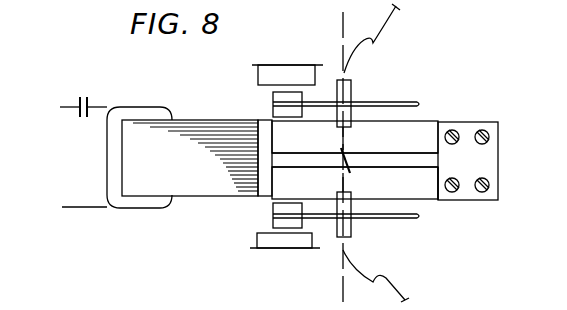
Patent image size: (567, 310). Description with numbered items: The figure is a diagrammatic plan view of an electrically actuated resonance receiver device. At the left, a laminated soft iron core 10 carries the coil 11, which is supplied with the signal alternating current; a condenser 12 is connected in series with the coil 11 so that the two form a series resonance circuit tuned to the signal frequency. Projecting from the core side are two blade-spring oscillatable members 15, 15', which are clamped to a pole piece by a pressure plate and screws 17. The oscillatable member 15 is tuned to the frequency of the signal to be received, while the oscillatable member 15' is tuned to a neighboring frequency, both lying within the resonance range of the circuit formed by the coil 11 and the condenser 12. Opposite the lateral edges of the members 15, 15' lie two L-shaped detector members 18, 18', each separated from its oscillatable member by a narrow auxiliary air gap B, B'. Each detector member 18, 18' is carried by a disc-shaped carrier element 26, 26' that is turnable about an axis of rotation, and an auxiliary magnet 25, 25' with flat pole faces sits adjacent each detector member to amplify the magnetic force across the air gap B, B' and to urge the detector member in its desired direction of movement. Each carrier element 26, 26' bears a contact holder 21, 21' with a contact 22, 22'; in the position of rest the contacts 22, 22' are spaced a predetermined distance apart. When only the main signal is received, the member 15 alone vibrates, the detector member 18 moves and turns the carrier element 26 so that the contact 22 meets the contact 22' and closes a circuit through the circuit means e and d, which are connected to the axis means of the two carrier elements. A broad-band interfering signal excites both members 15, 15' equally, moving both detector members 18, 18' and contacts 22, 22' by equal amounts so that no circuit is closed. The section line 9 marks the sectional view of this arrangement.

The soft iron core 10 is at (132, 158).
The coil 11 is at (101, 209).
The condenser 12 is at (90, 93).
The oscillatable member 15 is at (459, 146).
The oscillatable member 15' is at (442, 192).
The screws 17 is at (456, 130).
The detector member 18 is at (268, 103).
The detector member 18' is at (262, 220).
The contact holder 21 is at (368, 114).
The contact holder 21' is at (384, 206).
The contact 22 is at (362, 152).
The contact 22' is at (355, 171).
The auxiliary magnet 25 is at (287, 61).
The auxiliary magnet 25' is at (285, 252).
The carrier element 26 is at (352, 89).
The carrier element 26' is at (372, 225).
The section line 9- 9 is at (343, 23).
The circuit means e is at (382, 31).
The circuit means d is at (391, 283).
The auxiliary air gap B is at (240, 111).
The auxiliary air gap B' is at (248, 211).